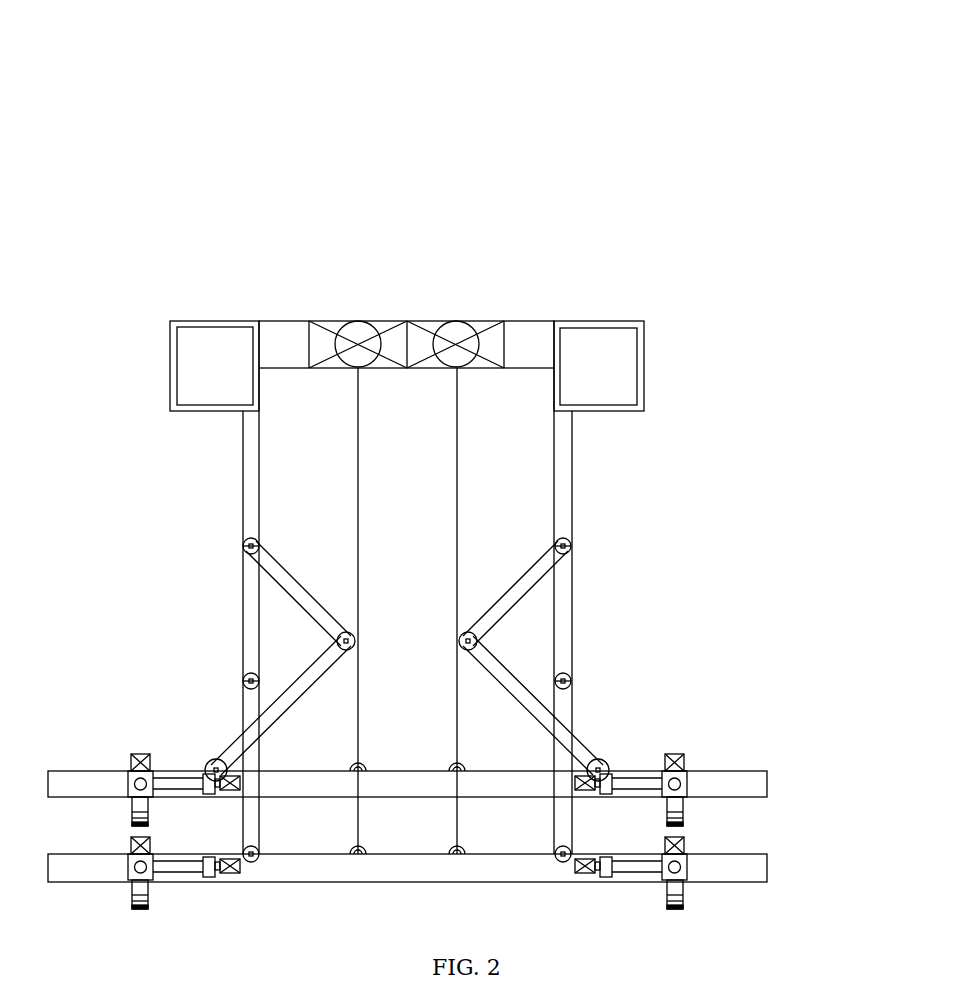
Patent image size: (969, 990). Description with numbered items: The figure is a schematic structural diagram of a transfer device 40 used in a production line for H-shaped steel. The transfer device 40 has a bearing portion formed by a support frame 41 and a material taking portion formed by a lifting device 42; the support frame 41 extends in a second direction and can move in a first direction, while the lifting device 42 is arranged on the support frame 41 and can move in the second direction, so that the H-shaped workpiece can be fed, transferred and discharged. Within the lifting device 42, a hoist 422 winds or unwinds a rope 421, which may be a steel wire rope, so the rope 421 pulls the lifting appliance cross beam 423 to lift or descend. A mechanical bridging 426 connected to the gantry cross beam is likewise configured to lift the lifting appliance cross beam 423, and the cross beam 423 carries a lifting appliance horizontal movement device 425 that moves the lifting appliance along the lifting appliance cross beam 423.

The transfer device 40 is at (368, 87).
The support frame 41 is at (599, 367).
The lifting device 42 is at (203, 605).
The rope 421 is at (457, 538).
The hoist 422 is at (456, 344).
The lifting appliance cross beam 423 is at (750, 790).
The lifting appliance horizontal movement device 425 is at (628, 785).
The mechanical bridging 426 is at (564, 627).